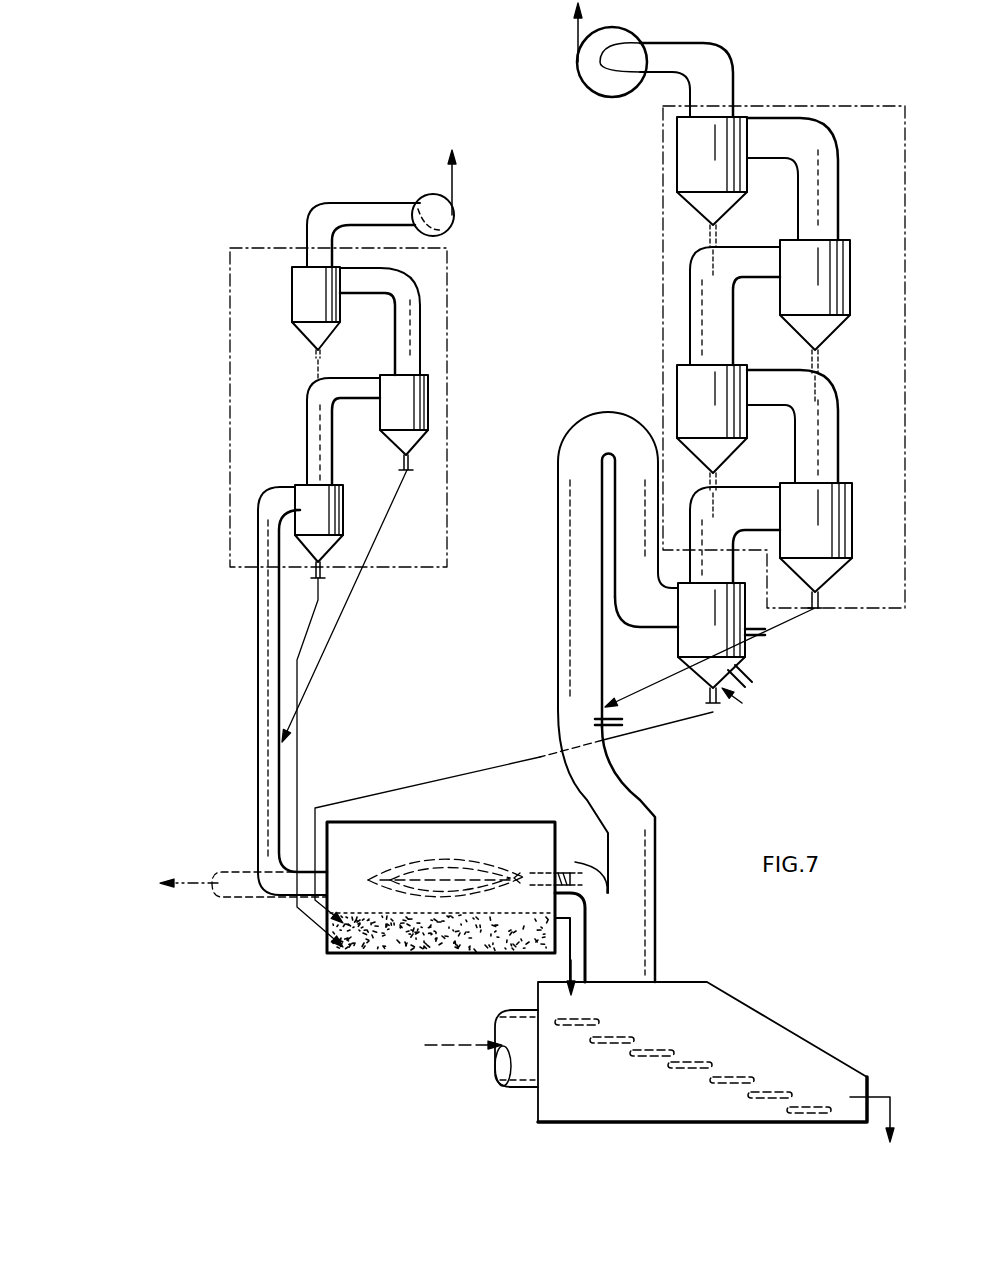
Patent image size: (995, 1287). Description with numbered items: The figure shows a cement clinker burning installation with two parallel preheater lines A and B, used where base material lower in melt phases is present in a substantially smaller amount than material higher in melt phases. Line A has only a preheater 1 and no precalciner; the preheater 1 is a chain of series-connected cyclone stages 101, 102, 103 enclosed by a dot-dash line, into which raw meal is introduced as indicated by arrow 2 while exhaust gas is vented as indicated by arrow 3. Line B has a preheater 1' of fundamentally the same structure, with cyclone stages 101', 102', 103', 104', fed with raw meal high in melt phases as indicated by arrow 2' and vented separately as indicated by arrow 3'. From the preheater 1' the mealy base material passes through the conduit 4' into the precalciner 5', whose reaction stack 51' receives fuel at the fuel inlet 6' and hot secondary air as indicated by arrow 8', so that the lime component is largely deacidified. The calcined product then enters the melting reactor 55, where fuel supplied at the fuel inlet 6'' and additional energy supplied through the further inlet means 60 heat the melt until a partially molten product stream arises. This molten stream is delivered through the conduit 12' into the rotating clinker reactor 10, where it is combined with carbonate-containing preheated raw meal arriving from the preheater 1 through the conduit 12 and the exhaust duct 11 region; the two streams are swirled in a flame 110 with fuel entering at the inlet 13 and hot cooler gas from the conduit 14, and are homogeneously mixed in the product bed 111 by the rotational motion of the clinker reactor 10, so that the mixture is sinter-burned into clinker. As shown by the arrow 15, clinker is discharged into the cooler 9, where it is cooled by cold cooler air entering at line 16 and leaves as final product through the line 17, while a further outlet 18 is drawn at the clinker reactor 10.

The preheater 1 is at (316, 407).
The raw meal feed arrow 2 is at (417, 296).
The exhaust gas arrow 3 is at (396, 208).
The cyclone stage 101 is at (342, 526).
The cyclone stage 102 is at (442, 422).
The cyclone stage 103 is at (291, 322).
The preheater line A is at (470, 305).
The preheater line B is at (634, 235).
The preheater 1' is at (751, 357).
The raw meal feed arrow 2' is at (805, 150).
The exhaust gas arrow 3' is at (632, 60).
The cyclone stage 101' is at (841, 535).
The cyclone stage 102' is at (677, 429).
The cyclone stage 103' is at (840, 313).
The cyclone stage 104' is at (673, 197).
The conduit 4' is at (726, 657).
The precalciner 5' is at (618, 542).
The reaction stack 51' is at (590, 590).
The fuel inlet 6' is at (624, 711).
The fuel inlet 6'' is at (773, 653).
The melting reactor 55 is at (730, 668).
The further inlet means 60 is at (722, 705).
The secondary air arrow 8' is at (621, 846).
The conduit 12' is at (514, 817).
The exhaust gas duct from furnace 11 is at (263, 787).
The conduit 12 is at (344, 708).
The clinker reactor 10 is at (362, 862).
The flame 110 is at (455, 858).
The product bed 111 is at (423, 933).
The fuel inlet 13 is at (567, 870).
The conduit 14 is at (585, 892).
The clinker discharge arrow 15 is at (568, 960).
The cooler air line 16 is at (462, 1045).
The discharge line 17 is at (880, 1097).
The bypass gas outlet 18 is at (232, 878).
The cooler 9 is at (707, 1026).